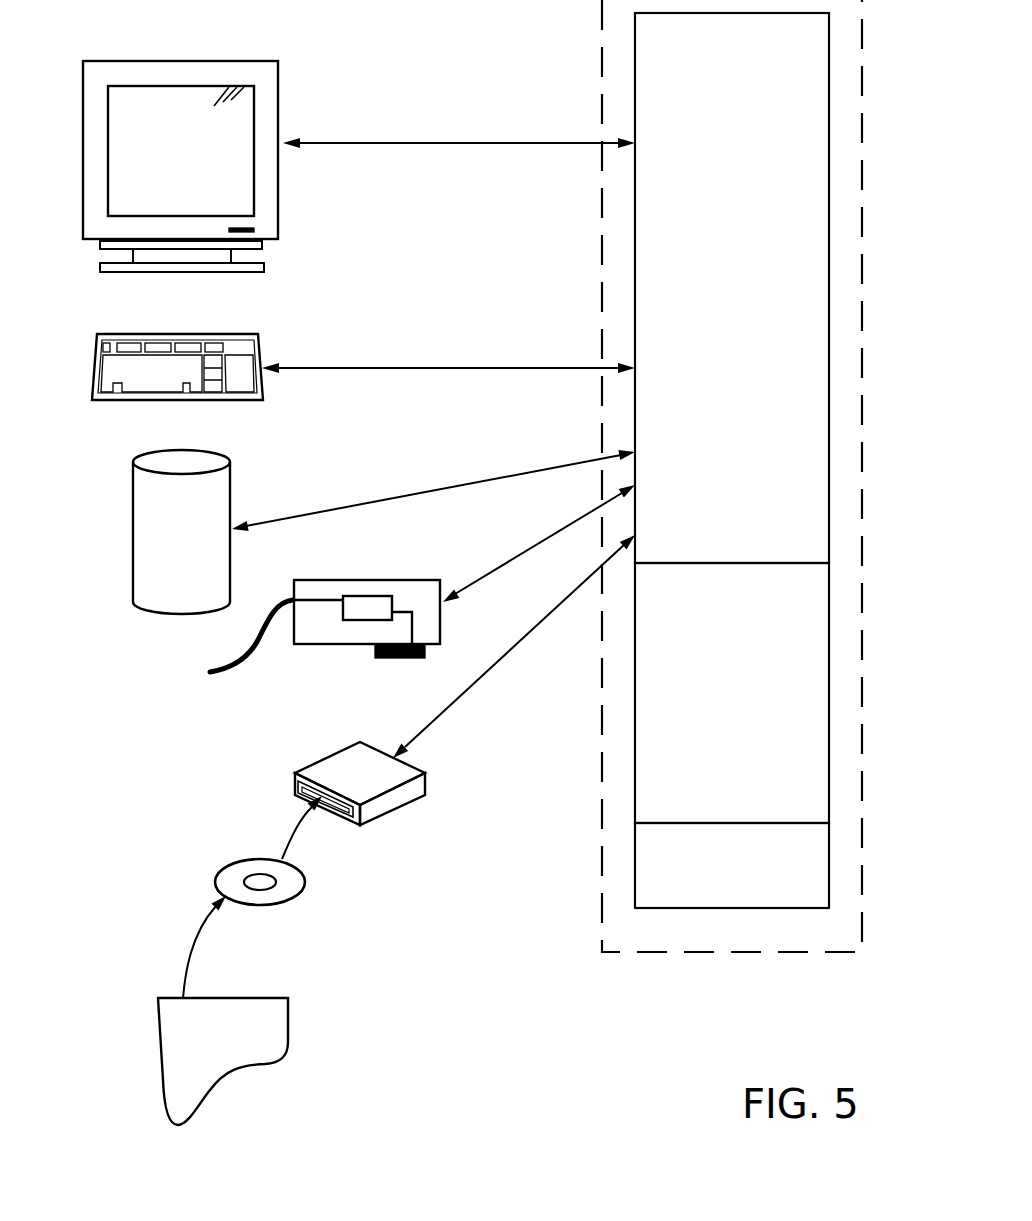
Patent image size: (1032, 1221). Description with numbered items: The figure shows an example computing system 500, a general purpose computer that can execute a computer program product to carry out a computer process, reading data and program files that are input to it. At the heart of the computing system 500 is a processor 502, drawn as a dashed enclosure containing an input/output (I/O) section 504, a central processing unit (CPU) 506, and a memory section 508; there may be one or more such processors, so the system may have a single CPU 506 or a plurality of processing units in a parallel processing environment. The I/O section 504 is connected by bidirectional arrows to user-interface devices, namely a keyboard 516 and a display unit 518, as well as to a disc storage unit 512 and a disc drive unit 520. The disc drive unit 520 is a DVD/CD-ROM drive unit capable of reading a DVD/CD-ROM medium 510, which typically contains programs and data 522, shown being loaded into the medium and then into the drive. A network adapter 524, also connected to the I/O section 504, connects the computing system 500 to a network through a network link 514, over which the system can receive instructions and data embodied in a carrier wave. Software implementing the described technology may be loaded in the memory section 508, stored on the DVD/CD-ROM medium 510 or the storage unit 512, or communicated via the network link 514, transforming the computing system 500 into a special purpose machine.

The computing system 500 is at (566, 1048).
The processor 502 is at (602, 43).
The input/output (I/O) section 504 is at (714, 310).
The central processing unit (CPU) 506 is at (714, 715).
The memory section 508 is at (714, 886).
The DVD/CD-ROM medium 510 is at (228, 858).
The storage unit 512 is at (132, 482).
The network link 514 is at (235, 673).
The keyboard 516 is at (136, 334).
The display unit 518 is at (148, 61).
The disc drive unit 520 is at (343, 773).
The programs and data 522 is at (290, 1018).
The network adapter 524 is at (343, 650).